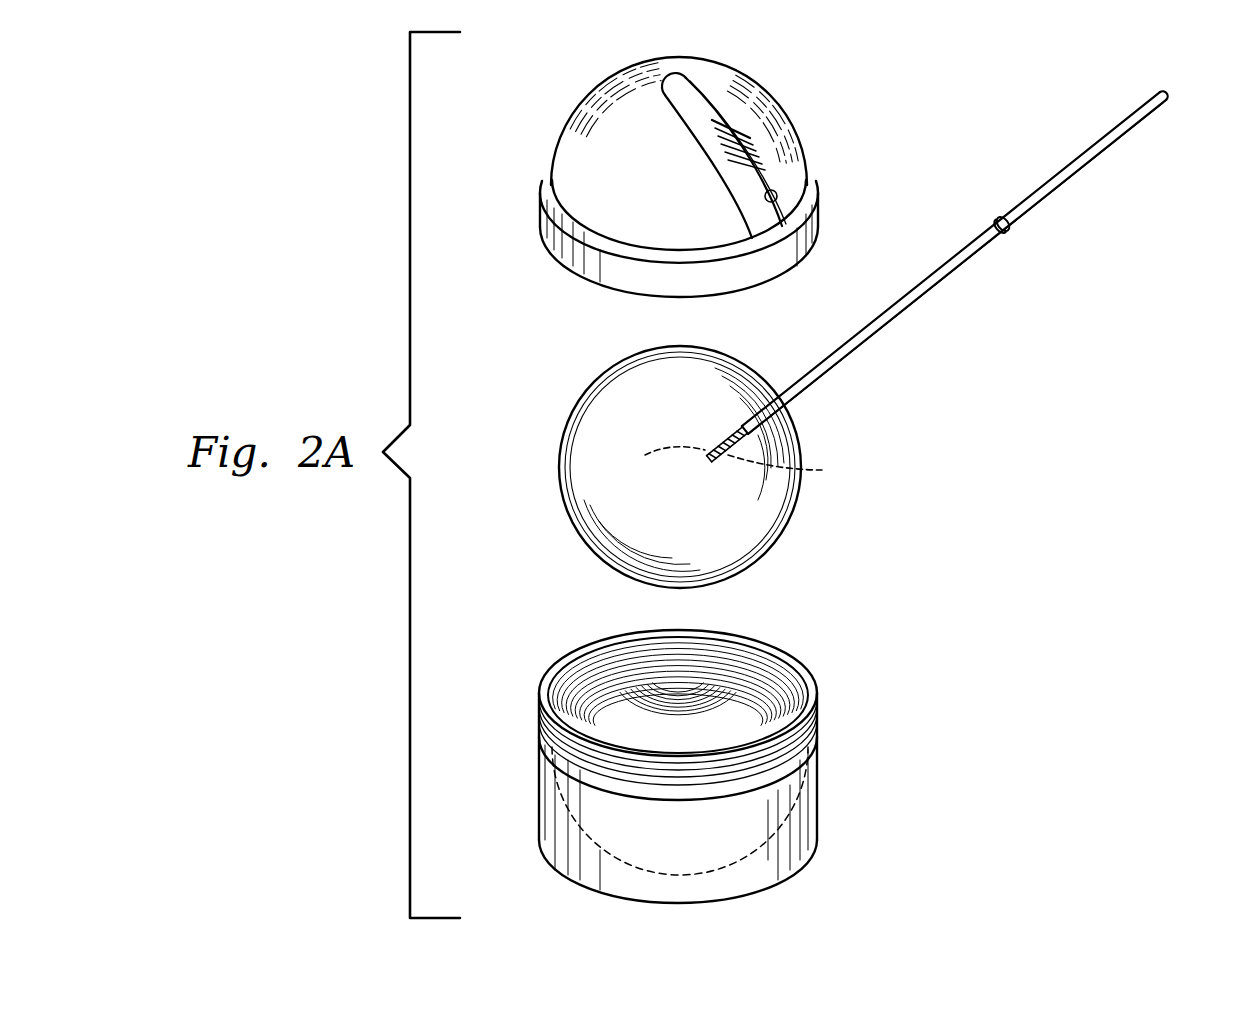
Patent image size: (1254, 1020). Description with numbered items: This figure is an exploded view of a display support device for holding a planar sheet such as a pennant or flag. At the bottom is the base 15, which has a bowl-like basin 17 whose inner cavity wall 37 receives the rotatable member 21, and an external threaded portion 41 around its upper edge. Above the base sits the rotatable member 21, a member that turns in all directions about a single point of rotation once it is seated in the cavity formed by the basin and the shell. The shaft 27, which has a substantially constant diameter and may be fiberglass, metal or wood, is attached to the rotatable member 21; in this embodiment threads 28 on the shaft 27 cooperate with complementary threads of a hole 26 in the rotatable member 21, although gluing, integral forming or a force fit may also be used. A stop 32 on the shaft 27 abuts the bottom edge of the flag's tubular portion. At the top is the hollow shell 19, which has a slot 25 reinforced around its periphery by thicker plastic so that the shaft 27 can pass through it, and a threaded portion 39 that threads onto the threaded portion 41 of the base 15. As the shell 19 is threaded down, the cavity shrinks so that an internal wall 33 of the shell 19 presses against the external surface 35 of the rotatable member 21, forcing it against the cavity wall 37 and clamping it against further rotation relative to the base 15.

The base 15 is at (805, 807).
The bowl-like basin 17 is at (748, 672).
The hollow shell 19 is at (585, 145).
The rotatable member 21 is at (606, 418).
The slot 25 is at (710, 108).
The hole 26 is at (655, 457).
The shaft 27 is at (968, 258).
The threads 28 is at (791, 470).
The stop 32 is at (996, 215).
The internal wall 33 is at (770, 200).
The external surface 35 is at (707, 388).
The cavity wall 37 is at (598, 706).
The threaded portion 39 is at (560, 242).
The threaded portion 41 is at (800, 728).